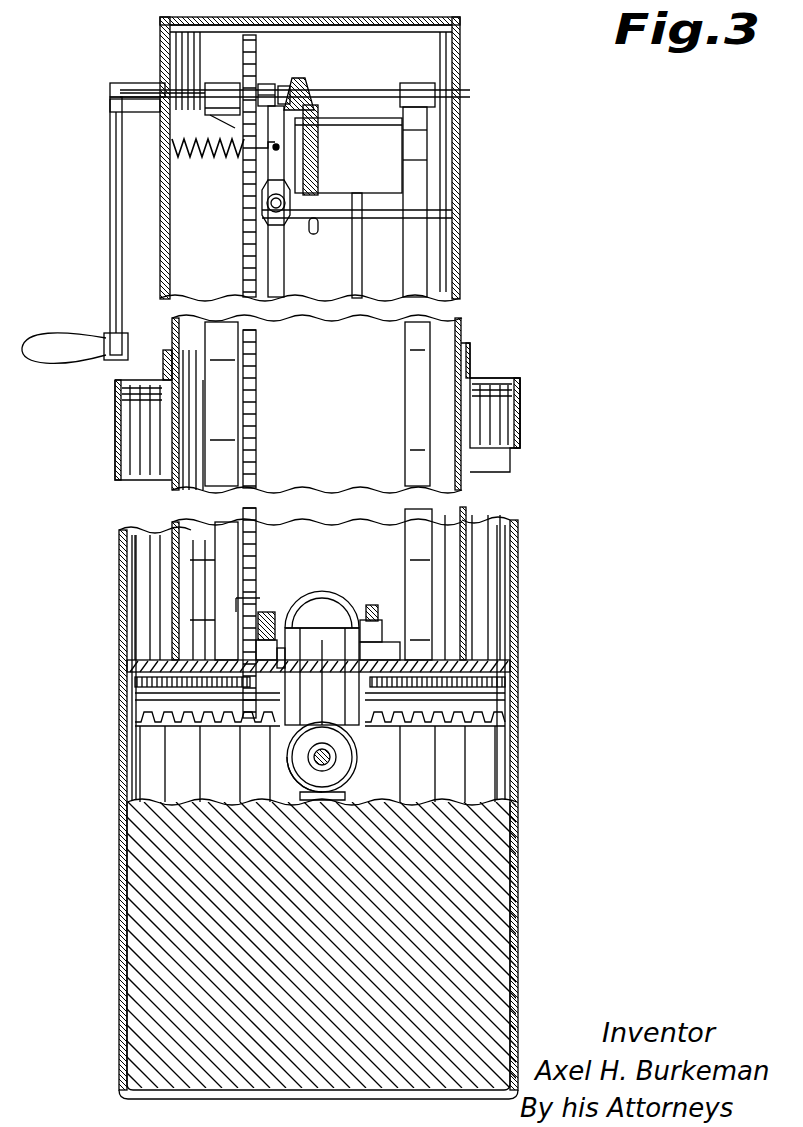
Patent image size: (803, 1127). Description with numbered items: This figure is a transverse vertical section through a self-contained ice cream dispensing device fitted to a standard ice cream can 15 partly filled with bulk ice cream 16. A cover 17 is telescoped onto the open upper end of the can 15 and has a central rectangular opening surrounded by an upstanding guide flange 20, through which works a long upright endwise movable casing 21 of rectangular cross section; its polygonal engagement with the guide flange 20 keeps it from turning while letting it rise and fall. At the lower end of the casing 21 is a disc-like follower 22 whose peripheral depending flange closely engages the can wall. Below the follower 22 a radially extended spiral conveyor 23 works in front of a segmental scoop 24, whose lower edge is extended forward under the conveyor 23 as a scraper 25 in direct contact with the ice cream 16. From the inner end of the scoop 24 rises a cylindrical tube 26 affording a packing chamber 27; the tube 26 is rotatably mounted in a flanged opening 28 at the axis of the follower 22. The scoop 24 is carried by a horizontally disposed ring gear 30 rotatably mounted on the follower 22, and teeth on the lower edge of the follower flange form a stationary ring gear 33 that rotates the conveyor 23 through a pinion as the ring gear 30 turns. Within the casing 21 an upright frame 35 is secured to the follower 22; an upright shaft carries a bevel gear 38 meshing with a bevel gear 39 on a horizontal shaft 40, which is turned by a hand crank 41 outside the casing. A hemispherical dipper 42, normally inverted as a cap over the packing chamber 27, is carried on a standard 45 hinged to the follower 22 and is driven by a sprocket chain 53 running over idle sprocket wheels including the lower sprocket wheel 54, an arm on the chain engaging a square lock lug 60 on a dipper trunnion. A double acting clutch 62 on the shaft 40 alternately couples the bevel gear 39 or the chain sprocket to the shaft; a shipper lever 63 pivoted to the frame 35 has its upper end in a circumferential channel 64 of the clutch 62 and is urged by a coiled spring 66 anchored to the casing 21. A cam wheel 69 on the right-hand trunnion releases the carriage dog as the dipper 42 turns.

The ice cream can 15 is at (530, 460).
The bulk ice cream 16 is at (488, 840).
The cover 17 is at (505, 378).
The guide flange 20 is at (470, 362).
The casing 21 is at (462, 272).
The follower 22 is at (160, 660).
The spiral conveyor 23 is at (340, 750).
The scoop 24 is at (357, 777).
The scraper 25 is at (305, 792).
The cylindrical tube 26 is at (385, 640).
The packing chamber 27 is at (322, 676).
The flanged opening 28 is at (286, 658).
The ring gear 30 is at (165, 690).
The stationary ring gear 33 is at (193, 726).
The upright frame 35 is at (210, 98).
The bevel gear 38 is at (345, 92).
The bevel gear 39 is at (310, 80).
The horizontal shaft 40 is at (460, 90).
The hand crank 41 is at (110, 188).
The dipper 42 is at (325, 592).
The standard 45 is at (343, 236).
The sprocket chain 53 is at (243, 180).
The lower sprocket wheel 54 is at (243, 600).
The lock lug 60 is at (266, 612).
The double acting clutch 62 is at (265, 84).
The shipper lever 63 is at (284, 255).
The circumferential channel 64 is at (290, 86).
The coiled spring 66 is at (195, 160).
The cam wheel 69 is at (372, 605).